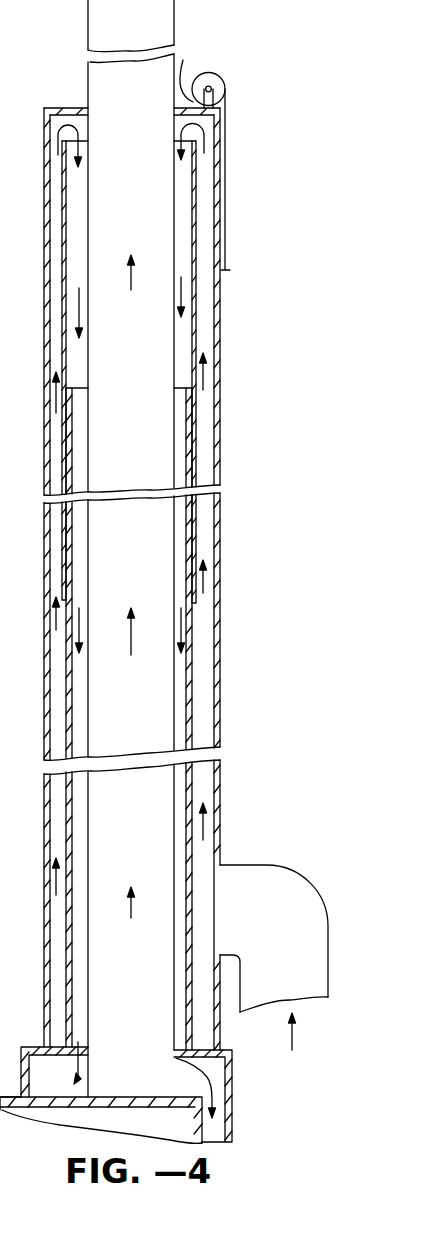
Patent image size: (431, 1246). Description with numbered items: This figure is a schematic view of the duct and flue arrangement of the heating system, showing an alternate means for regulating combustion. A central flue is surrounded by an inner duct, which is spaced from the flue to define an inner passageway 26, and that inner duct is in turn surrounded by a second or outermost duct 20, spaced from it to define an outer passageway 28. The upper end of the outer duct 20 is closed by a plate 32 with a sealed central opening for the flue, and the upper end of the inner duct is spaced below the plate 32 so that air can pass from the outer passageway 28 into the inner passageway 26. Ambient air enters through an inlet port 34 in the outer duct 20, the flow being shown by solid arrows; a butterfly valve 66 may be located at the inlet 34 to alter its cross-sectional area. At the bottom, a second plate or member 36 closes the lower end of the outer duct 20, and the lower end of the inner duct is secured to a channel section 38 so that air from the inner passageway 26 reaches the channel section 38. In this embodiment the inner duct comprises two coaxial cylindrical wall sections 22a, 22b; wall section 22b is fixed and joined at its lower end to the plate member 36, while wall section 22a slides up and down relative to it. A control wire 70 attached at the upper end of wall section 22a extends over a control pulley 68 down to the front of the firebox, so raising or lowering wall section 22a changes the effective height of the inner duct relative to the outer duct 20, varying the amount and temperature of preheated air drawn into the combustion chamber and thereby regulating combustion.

The second or outermost duct 20 is at (217, 386).
The wall section 22a is at (196, 222).
The wall section 22b is at (190, 663).
The inner passageway 26 is at (185, 338).
The outer passageway 28 is at (203, 257).
The plate 32 is at (60, 108).
The inlet port 34 is at (273, 865).
The second plate or member 36 is at (200, 1042).
The channel section 38 is at (232, 1112).
The butterfly valve 66 is at (13, 1082).
The control pulley 68 is at (224, 72).
The control wire 70 is at (183, 60).